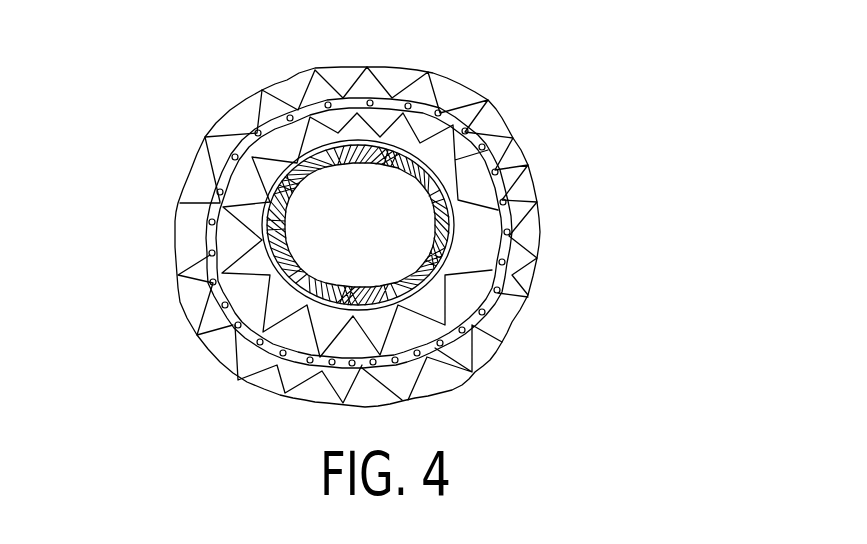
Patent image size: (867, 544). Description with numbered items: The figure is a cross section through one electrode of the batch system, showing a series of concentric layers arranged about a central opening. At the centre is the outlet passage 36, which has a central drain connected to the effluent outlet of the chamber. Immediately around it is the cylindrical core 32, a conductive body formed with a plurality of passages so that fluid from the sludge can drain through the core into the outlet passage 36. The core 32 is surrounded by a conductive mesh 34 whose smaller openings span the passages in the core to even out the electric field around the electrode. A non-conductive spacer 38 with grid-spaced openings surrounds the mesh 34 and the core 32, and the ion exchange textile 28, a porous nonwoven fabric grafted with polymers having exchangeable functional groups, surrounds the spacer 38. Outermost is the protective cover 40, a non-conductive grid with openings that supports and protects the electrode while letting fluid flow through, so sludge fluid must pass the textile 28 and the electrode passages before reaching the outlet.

The protective cover 40 is at (480, 360).
The ion exchange textile 28 is at (472, 325).
The cylindrical core 32 is at (463, 131).
The outlet passage 36 is at (447, 183).
The conductive mesh 34 is at (452, 210).
The non-conductive spacer 38 is at (445, 219).